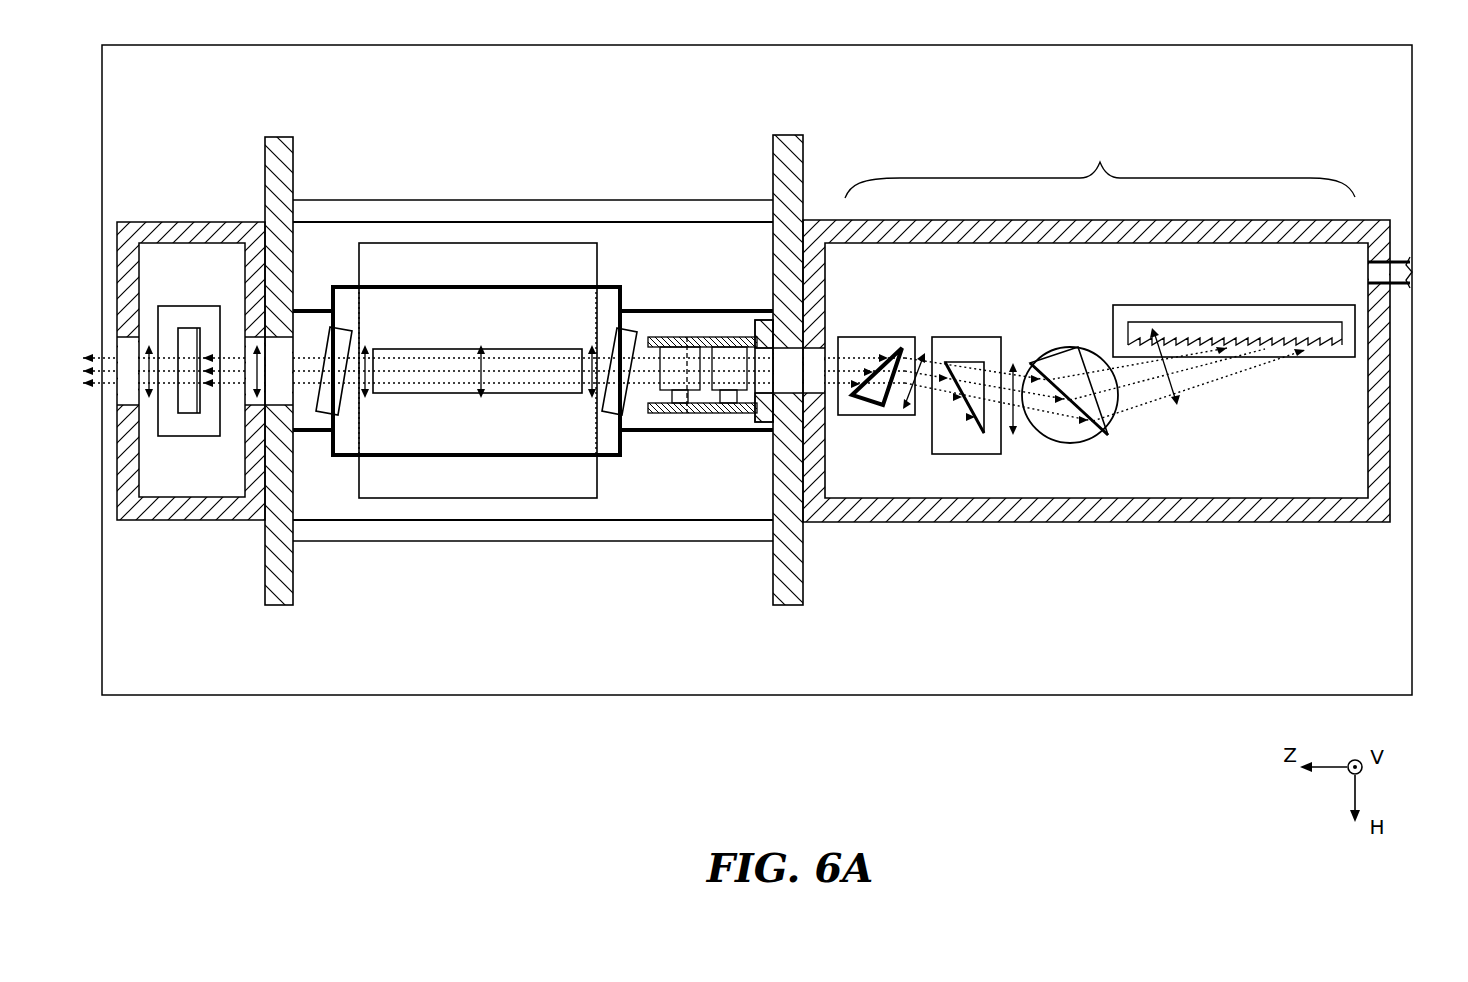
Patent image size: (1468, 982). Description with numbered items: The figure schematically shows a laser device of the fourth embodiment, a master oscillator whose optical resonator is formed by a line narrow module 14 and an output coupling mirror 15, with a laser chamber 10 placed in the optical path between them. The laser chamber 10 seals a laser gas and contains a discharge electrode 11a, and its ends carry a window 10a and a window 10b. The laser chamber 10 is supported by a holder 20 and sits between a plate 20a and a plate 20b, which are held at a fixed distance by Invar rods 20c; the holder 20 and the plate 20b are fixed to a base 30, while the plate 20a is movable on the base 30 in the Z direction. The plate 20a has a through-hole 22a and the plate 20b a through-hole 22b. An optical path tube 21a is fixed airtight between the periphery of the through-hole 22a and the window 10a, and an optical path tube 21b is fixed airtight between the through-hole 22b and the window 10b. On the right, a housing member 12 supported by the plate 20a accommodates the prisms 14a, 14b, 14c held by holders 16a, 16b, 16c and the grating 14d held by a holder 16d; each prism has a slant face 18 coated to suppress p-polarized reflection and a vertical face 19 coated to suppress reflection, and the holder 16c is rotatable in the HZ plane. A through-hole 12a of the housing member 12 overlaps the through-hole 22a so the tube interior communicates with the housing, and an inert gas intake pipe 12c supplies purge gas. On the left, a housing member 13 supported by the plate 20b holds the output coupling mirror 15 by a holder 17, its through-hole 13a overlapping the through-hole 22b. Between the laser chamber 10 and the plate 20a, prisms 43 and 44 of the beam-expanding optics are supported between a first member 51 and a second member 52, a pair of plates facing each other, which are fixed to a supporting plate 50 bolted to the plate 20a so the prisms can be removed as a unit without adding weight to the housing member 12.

The base 30 is at (160, 696).
The housing member 13 is at (188, 222).
The through-hole 13a is at (240, 340).
The output coupling mirror 15 is at (222, 437).
The holder 17 is at (190, 414).
The holder 20 is at (468, 500).
The plate 20a is at (773, 170).
The plate 20b is at (295, 170).
The Invar rods 20c is at (548, 200).
The through-hole 22a is at (770, 320).
The through-hole 22b is at (298, 340).
The laser chamber 10 is at (445, 284).
The window 10a is at (597, 400).
The window 10b is at (353, 338).
The discharge electrode 11a is at (443, 349).
The optical path tube 21a is at (642, 435).
The optical path tube 21b is at (322, 437).
The first member 51 is at (652, 337).
The second member 52 is at (705, 415).
The prism 43 is at (683, 340).
The prism 44 is at (725, 340).
The supporting plate 50 is at (757, 424).
The housing member 12 is at (837, 218).
The through-hole 12a is at (830, 345).
The inert gas intake pipe 12c is at (1407, 287).
The line narrow module 14 is at (1100, 165).
The prism 14a is at (900, 337).
The prism 14b is at (968, 362).
The prism 14c is at (1057, 350).
The grating 14d is at (1210, 304).
The holder 16a is at (894, 423).
The holder 16b is at (980, 423).
The holder 16c is at (1070, 423).
The holder 16d is at (1234, 423).
The slant face 18 is at (897, 350).
The vertical face 19 is at (915, 350).